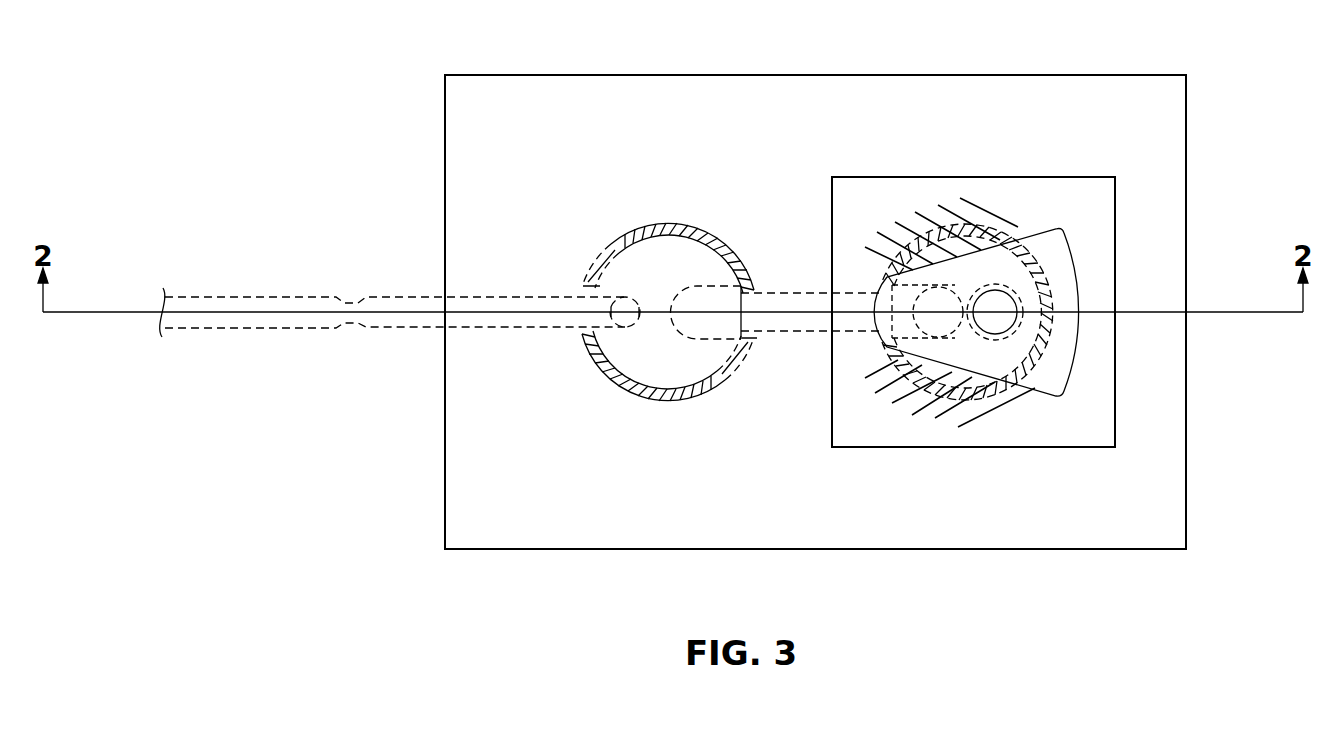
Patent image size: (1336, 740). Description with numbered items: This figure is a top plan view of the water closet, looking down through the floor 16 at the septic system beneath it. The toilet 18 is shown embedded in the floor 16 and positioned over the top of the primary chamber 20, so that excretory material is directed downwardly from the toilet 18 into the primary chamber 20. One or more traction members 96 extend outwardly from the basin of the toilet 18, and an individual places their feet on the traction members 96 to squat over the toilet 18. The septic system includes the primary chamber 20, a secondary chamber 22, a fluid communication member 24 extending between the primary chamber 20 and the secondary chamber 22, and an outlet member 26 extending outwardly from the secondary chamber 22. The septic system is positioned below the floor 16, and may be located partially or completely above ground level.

The floor 16 is at (472, 73).
The toilet 18 is at (1058, 228).
The primary chamber 20 is at (937, 400).
The secondary chamber 22 is at (628, 390).
The fluid communication member 24 is at (820, 292).
The outlet member 26 is at (530, 297).
The traction members 96 is at (995, 407).